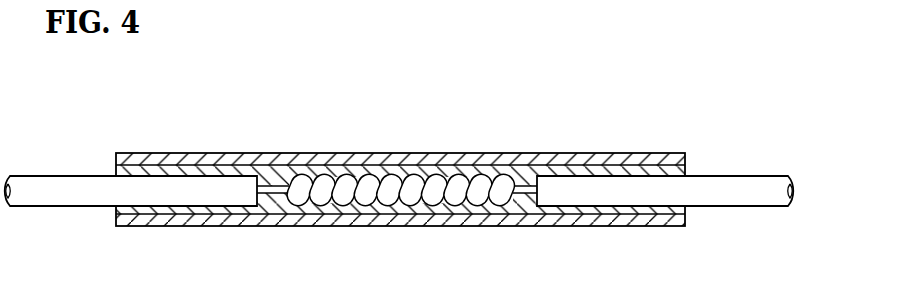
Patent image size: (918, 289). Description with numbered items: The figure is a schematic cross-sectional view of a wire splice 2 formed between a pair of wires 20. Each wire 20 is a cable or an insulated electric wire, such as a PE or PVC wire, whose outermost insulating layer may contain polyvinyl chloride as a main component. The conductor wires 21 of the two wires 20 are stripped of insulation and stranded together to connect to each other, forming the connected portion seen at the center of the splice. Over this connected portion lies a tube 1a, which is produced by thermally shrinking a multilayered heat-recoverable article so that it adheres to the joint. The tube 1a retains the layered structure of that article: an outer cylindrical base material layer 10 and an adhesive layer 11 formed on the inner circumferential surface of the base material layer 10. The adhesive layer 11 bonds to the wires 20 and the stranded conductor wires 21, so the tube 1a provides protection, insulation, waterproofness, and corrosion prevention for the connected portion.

The wire splice 2 is at (400, 153).
The tube 1a is at (400, 156).
The base material layer 10 is at (363, 162).
The adhesive layer 11 is at (282, 169).
The wire 20 is at (55, 182).
The conductor wire 21 is at (283, 190).